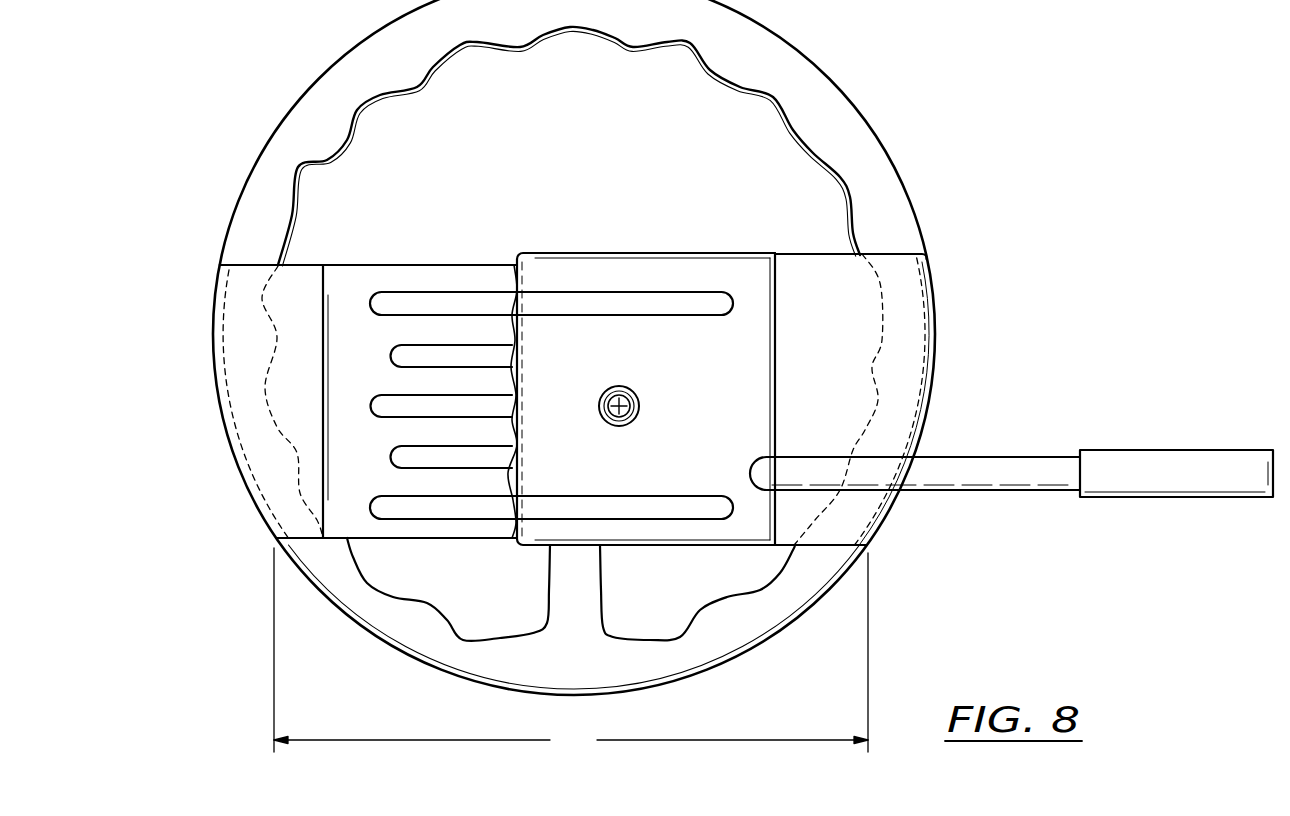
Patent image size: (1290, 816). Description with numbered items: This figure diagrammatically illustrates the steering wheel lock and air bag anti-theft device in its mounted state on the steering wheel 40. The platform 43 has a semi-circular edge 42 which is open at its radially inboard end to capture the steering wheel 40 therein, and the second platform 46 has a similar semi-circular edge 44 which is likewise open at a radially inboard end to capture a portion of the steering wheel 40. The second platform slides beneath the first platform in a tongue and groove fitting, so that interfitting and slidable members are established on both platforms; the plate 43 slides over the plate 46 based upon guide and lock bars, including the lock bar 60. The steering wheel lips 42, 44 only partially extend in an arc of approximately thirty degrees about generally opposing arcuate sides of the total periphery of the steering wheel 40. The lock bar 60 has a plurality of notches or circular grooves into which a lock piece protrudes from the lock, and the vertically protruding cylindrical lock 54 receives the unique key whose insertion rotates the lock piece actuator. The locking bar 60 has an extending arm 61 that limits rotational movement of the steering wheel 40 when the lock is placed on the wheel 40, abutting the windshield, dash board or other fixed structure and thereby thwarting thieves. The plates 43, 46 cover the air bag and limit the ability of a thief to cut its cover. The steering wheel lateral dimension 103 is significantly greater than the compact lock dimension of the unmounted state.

The steering wheel 40 is at (876, 138).
The semi-circular edge 42 is at (935, 350).
The platform 43 is at (750, 252).
The semi-circular edge 44 is at (223, 422).
The second platform 46 is at (405, 263).
The cylindrical lock 54 is at (632, 388).
The lock bar 60 is at (932, 495).
The extending arm 61 is at (978, 455).
The steering wheel lateral dimension 103 is at (571, 654).